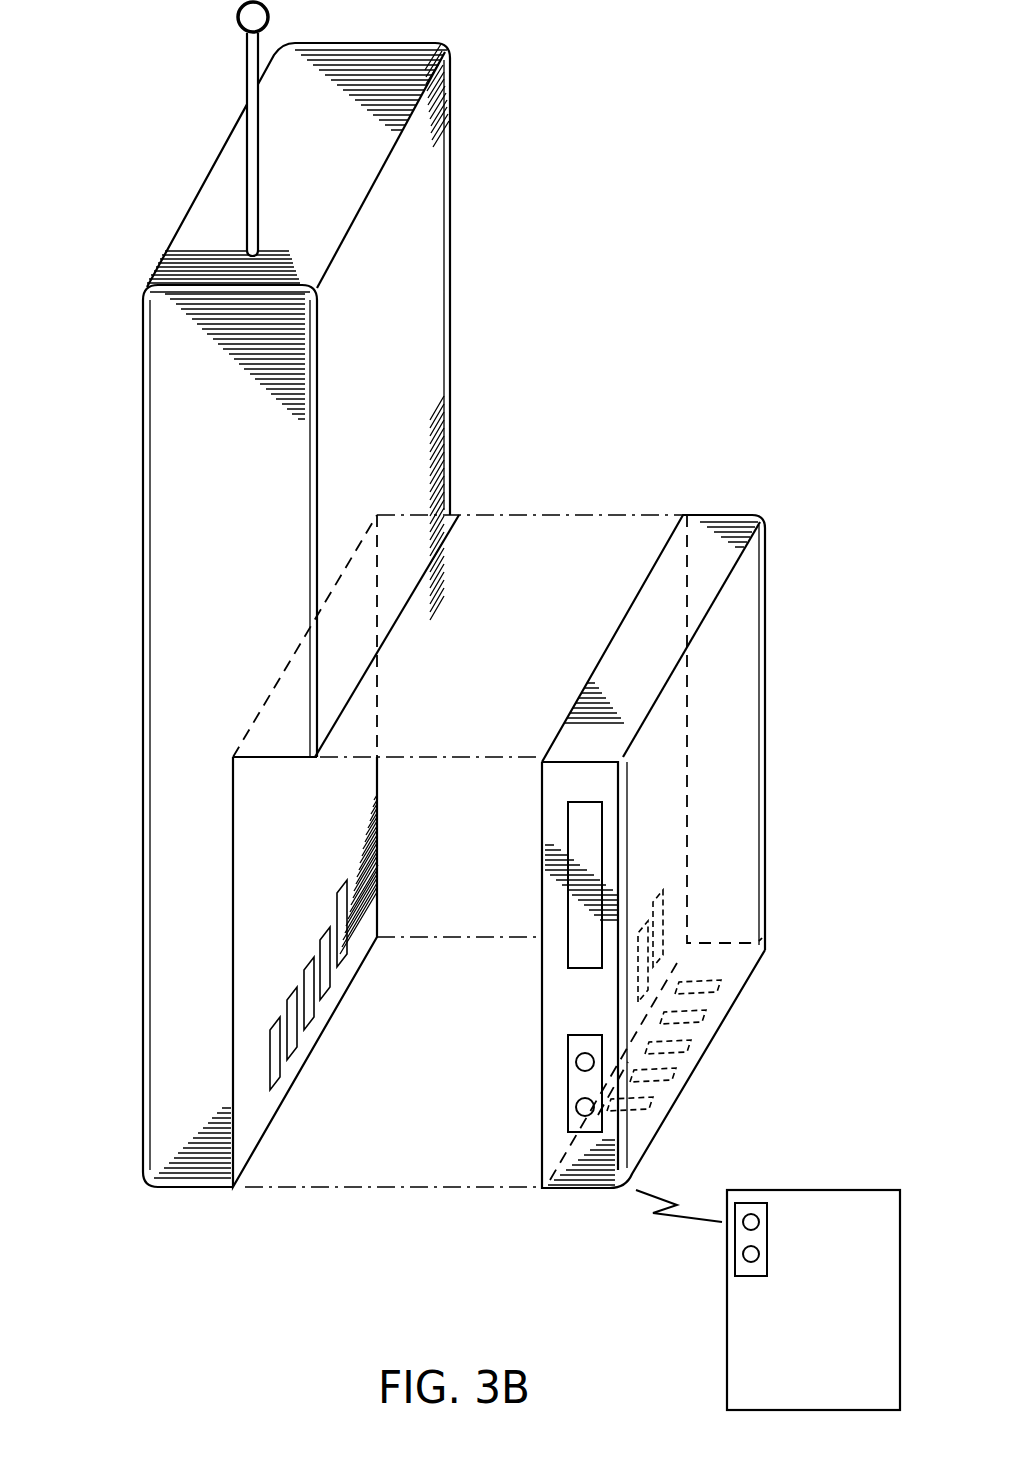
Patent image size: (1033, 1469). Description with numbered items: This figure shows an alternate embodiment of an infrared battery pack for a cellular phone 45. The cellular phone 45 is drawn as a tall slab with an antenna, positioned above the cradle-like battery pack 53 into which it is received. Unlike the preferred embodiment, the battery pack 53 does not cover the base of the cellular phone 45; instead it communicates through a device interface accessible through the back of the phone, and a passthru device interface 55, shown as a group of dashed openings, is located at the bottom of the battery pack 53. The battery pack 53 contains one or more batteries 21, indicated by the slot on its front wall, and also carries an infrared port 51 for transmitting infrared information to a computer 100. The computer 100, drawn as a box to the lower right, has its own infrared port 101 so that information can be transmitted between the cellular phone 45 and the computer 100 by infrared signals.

The cellular phone 45 is at (147, 378).
The battery pack 53 is at (767, 856).
The batteries 21 is at (575, 883).
The passthru device interface 55 is at (718, 1020).
The infrared port 51 is at (570, 1090).
The computer 100 is at (733, 1361).
The infrared port 101 is at (735, 1250).